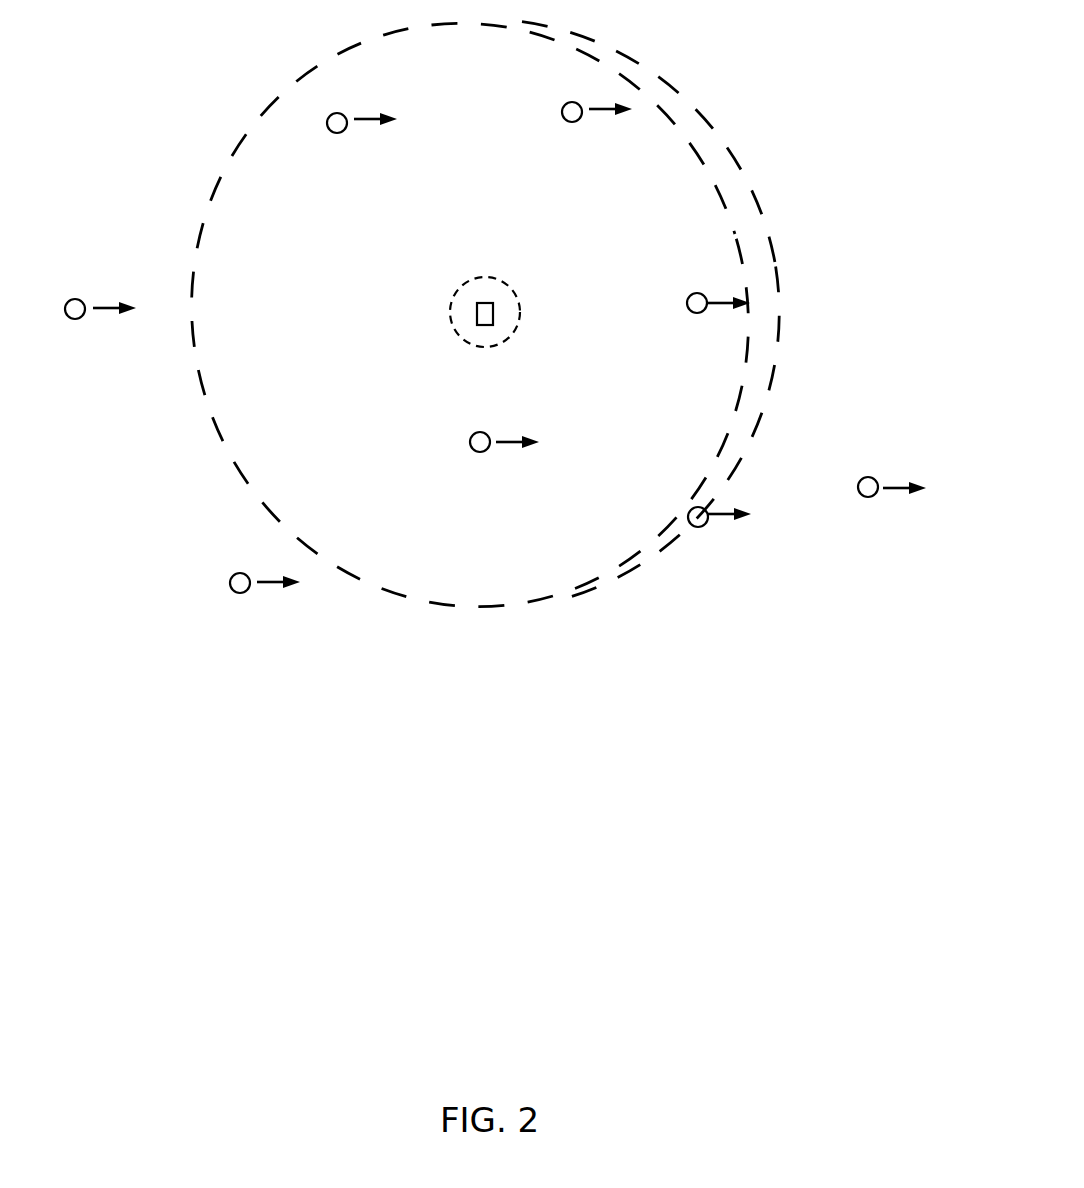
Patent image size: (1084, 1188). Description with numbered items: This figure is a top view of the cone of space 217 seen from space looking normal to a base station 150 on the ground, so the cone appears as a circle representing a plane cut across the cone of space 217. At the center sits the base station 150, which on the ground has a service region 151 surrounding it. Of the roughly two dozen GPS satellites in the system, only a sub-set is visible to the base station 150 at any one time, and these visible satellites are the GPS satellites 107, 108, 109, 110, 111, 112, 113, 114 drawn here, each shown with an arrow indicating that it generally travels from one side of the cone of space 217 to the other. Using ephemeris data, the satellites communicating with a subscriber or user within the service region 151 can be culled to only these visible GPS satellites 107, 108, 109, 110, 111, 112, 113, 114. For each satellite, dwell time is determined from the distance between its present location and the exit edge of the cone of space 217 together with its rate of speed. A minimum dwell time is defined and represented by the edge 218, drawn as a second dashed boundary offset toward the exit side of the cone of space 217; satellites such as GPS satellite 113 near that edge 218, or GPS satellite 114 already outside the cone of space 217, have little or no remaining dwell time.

The GPS satellite 107 is at (78, 319).
The GPS satellite 108 is at (243, 594).
The GPS satellite 109 is at (333, 133).
The GPS satellite 110 is at (483, 452).
The GPS satellite 111 is at (568, 122).
The GPS satellite 112 is at (696, 313).
The GPS satellite 113 is at (706, 524).
The GPS satellite 114 is at (869, 498).
The base station 150 is at (484, 313).
The service region 151 is at (493, 342).
The cone of space 217 is at (545, 607).
The edge 218 is at (723, 207).